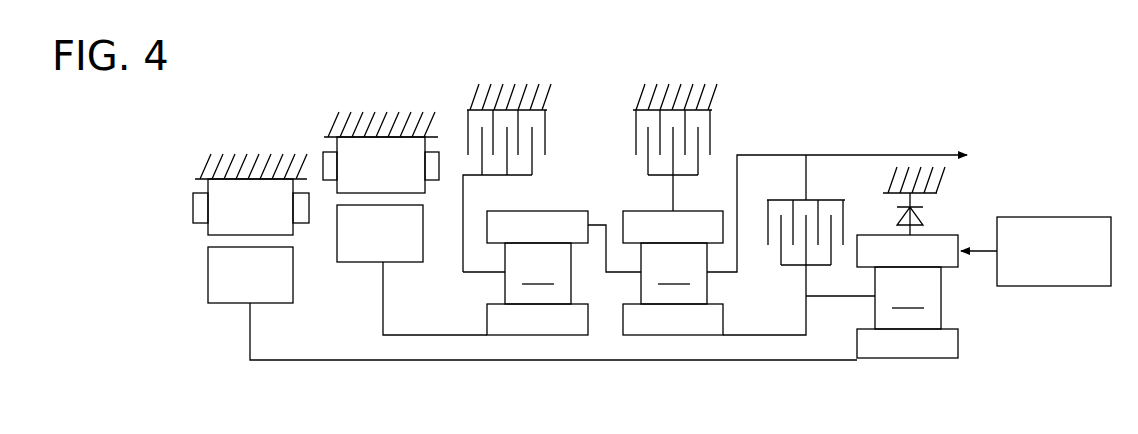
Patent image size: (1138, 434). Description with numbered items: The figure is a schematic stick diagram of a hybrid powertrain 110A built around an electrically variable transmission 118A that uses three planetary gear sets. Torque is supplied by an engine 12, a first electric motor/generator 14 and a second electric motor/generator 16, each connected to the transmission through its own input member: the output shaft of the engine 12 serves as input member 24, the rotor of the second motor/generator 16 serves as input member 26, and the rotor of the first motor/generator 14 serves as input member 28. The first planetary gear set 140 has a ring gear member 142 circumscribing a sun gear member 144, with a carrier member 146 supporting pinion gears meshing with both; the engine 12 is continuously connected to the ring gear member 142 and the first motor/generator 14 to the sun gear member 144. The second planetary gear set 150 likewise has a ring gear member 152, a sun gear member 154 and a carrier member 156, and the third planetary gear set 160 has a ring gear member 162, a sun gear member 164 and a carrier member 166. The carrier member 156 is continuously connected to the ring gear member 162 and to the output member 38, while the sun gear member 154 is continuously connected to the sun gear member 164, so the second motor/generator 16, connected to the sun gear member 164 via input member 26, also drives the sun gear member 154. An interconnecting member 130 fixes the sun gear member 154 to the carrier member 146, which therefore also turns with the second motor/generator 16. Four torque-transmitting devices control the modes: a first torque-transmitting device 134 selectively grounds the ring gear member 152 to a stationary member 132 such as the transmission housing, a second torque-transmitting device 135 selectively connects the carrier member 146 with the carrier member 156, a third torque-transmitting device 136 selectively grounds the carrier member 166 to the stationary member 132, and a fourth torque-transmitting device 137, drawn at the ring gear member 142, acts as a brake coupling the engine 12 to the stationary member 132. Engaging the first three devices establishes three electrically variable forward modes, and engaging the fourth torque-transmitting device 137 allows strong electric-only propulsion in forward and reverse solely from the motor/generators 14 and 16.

The engine 12 is at (1040, 217).
The first electric motor/generator 14 is at (196, 240).
The second electric motor/generator 16 is at (332, 205).
The input member 24 is at (975, 250).
The input member 26 is at (381, 290).
The input member 28 is at (247, 325).
The output member 38 is at (905, 155).
The powertrain 110A is at (195, 273).
The electrically variable transmission 118A is at (773, 107).
The interconnecting member 130 is at (806, 312).
The stationary member 132 is at (518, 95).
The first torque-transmitting device 134 is at (633, 127).
The second torque-transmitting device 135 is at (813, 198).
The third torque-transmitting device 136 is at (466, 127).
The fourth torque-transmitting device 137 is at (920, 218).
The first planetary gear set 140 is at (931, 307).
The ring gear member 142 is at (907, 251).
The sun gear member 144 is at (907, 343).
The carrier member 146 is at (908, 298).
The second planetary gear set 150 is at (704, 273).
The ring gear member 152 is at (673, 227).
The sun gear member 154 is at (720, 288).
The carrier member 156 is at (674, 273).
The third planetary gear set 160 is at (584, 302).
The ring gear member 162 is at (537, 227).
The sun gear member 164 is at (537, 319).
The carrier member 166 is at (538, 273).